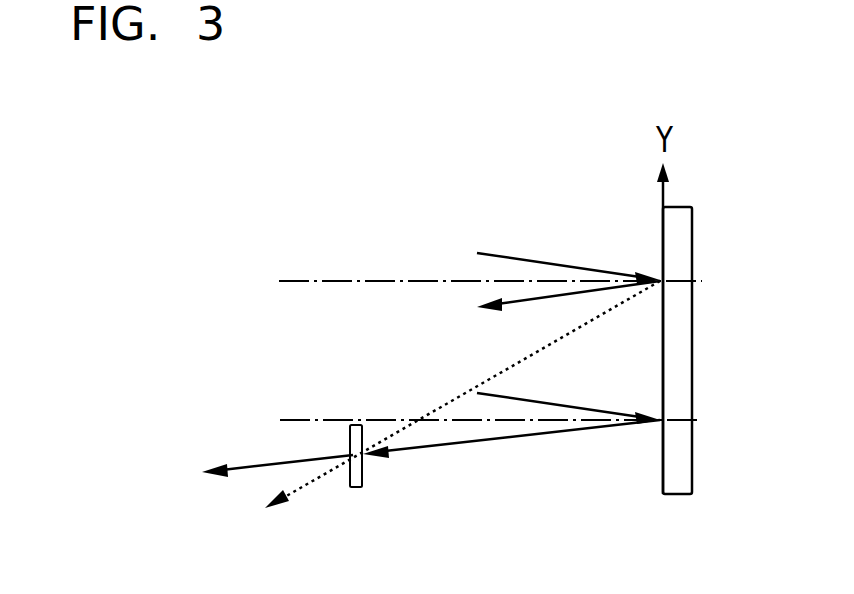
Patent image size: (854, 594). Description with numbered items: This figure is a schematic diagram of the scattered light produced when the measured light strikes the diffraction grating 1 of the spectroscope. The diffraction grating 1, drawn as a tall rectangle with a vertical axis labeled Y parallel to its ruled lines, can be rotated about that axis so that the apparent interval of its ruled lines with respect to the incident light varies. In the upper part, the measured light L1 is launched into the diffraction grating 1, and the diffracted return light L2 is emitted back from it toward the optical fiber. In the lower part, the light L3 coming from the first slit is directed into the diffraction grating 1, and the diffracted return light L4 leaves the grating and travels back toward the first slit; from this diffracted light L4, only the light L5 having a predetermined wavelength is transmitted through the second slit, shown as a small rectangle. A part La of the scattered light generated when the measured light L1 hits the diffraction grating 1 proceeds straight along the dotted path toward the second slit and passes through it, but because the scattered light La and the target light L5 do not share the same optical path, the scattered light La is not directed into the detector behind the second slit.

The diffraction grating 1 is at (692, 233).
The measured light L1 is at (523, 257).
The diffracted light L2 is at (507, 300).
The light emitted from the first slit L3 is at (565, 403).
The diffracted light L4 is at (567, 435).
The light of predetermined wavelength L5 is at (238, 467).
The scattered light La is at (318, 473).